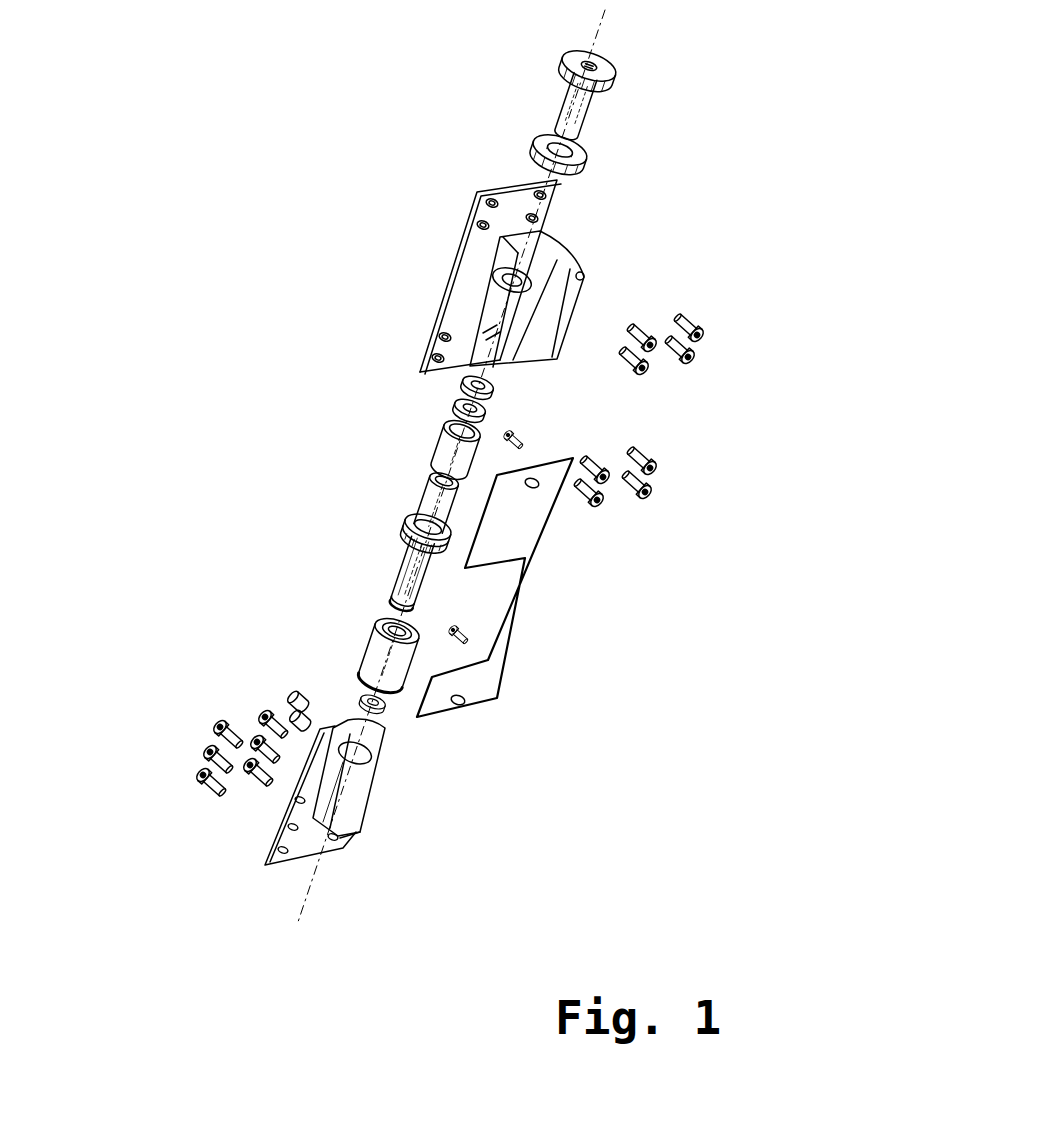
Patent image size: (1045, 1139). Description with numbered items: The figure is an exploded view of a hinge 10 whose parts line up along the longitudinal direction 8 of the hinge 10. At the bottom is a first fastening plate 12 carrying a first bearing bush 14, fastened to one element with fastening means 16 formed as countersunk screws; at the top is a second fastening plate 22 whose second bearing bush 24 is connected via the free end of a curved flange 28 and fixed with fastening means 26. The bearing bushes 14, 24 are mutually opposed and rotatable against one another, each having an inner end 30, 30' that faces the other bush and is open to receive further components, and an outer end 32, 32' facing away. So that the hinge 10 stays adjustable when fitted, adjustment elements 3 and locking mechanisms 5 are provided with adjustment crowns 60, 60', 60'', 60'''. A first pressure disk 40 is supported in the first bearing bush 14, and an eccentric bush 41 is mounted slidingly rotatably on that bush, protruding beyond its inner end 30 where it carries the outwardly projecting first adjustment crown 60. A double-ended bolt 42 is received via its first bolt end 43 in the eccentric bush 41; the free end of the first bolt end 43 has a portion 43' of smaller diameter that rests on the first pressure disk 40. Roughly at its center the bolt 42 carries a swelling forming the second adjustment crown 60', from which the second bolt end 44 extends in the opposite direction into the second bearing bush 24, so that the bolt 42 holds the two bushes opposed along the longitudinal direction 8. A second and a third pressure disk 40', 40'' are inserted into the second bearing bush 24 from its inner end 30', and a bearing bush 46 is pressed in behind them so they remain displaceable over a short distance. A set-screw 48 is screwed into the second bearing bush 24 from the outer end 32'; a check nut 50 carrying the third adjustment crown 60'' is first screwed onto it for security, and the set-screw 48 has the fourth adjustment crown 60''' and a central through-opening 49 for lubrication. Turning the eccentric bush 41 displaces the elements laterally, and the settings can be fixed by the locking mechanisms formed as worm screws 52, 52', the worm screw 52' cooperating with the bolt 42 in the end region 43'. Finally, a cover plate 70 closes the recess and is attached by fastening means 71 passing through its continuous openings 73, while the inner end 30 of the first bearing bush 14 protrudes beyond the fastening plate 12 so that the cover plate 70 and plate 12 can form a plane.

The longitudinal direction 8 is at (310, 892).
The hinge 10 is at (187, 267).
The first fastening plate 12 is at (262, 860).
The first bearing bush 14 is at (367, 782).
The fastening means 16 is at (198, 780).
The second fastening plate 22 is at (463, 290).
The second bearing bush 24 is at (483, 333).
The fastening means 26 is at (692, 360).
The curved flange 28 is at (557, 312).
The inner end of the first bearing bush 30 is at (379, 811).
The inner end of the second bearing bush 30' is at (350, 352).
The outer end of the first bearing bush 32 is at (410, 868).
The outer end of the second bearing bush 32' is at (670, 251).
The adjustment elements 3 is at (570, 105).
The eccentric bush 41 is at (367, 650).
The double-ended bolt 42 is at (387, 552).
The first bolt end 43 is at (294, 572).
The portion of smaller diameter 43' is at (284, 572).
The second bolt end 44 is at (432, 500).
The bearing bush/pressing bush 46 is at (445, 447).
The set-screw 48 is at (495, 81).
The central through-opening 49 is at (598, 56).
The locking mechanisms 5 is at (533, 157).
The check nut 50 is at (408, 176).
The locking mechanism (worm screw) 52 is at (221, 690).
The locking mechanism (worm screw) 52' is at (187, 715).
The first adjustment crown 60 is at (367, 647).
The second adjustment crown 60' is at (328, 506).
The third adjustment crown 60'' is at (408, 176).
The fourth adjustment crown 60''' is at (530, 59).
The first pressure disk 40 is at (275, 672).
The second pressure disk 40' is at (605, 416).
The third pressure disk 40'' is at (538, 389).
The cover plate 70 is at (521, 584).
The fastening means 71 is at (537, 487).
The continuous openings 73 is at (523, 447).